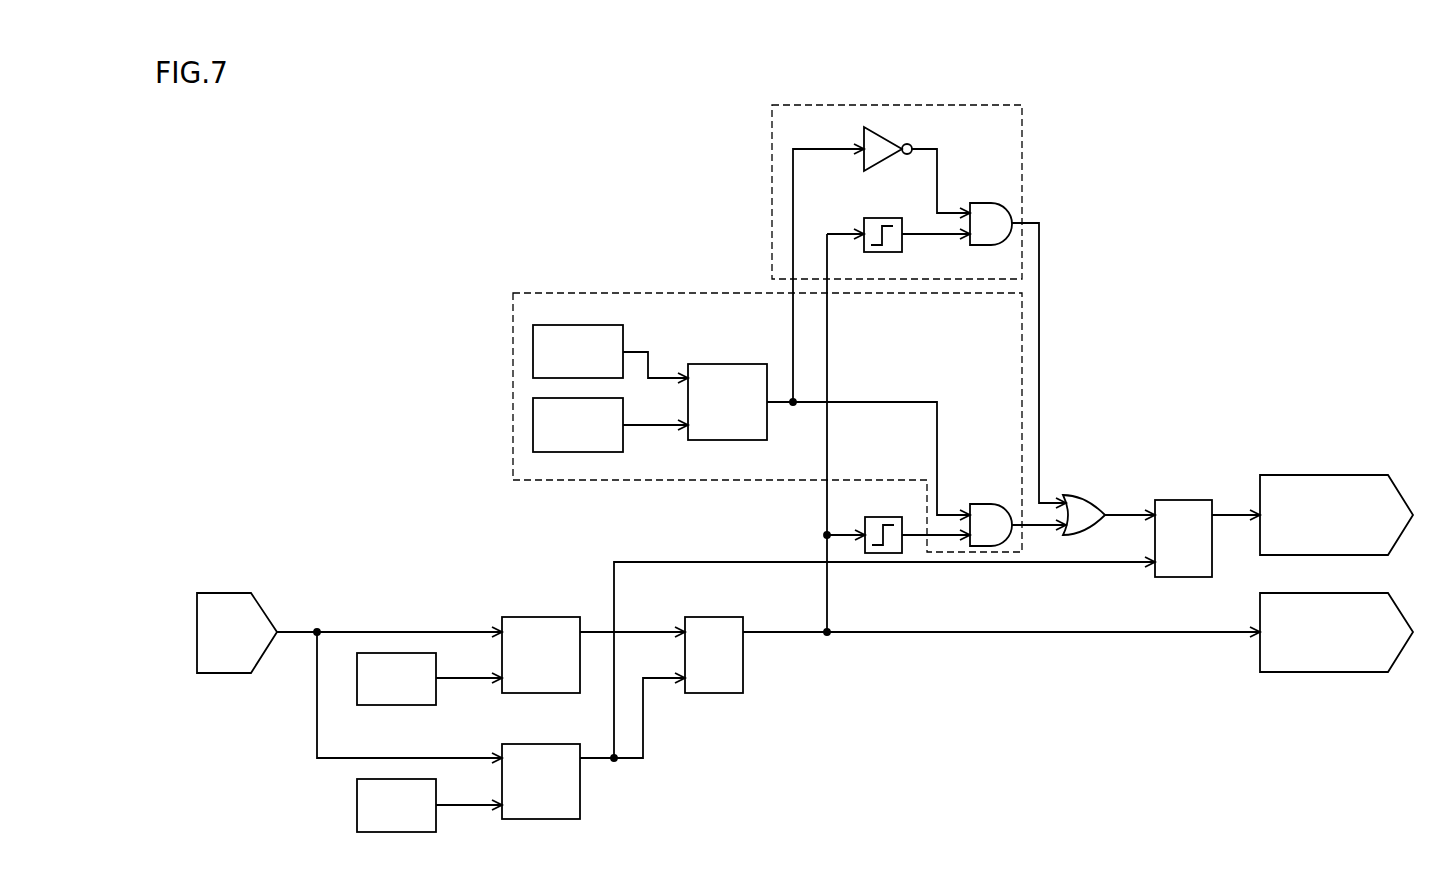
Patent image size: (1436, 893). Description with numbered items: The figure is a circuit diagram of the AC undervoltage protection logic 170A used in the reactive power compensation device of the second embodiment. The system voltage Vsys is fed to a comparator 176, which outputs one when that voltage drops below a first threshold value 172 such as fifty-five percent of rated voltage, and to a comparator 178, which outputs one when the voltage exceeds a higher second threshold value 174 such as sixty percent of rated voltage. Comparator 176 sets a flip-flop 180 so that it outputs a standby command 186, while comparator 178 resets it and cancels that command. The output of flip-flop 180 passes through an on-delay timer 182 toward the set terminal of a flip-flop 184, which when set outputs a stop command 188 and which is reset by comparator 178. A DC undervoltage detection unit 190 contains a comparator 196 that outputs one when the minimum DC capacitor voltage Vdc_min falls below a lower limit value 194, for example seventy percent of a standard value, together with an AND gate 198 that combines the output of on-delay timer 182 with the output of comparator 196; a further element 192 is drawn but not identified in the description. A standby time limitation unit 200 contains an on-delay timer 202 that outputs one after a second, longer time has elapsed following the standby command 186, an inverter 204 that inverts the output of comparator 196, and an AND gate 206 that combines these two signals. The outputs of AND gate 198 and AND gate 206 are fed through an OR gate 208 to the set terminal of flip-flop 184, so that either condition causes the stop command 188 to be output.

The AC undervoltage protection logic 170A is at (428, 154).
The first threshold value 172 is at (395, 705).
The second threshold value 174 is at (395, 832).
The comparator 176 is at (540, 617).
The comparator 178 is at (543, 819).
The flip-flop 180 is at (715, 693).
The on-delay timer 182 is at (885, 553).
The flip-flop 184 is at (1184, 500).
The standby command 186 is at (1340, 593).
The stop command 188 is at (1340, 475).
The DC undervoltage detection unit 190 is at (683, 293).
The minimum DC voltage Vdc_min 192 is at (580, 325).
The lower limit value 194 is at (580, 452).
The comparator 196 is at (727, 364).
The AND gate 198 is at (988, 504).
The standby time limitation unit 200 is at (968, 105).
The on-delay timer 202 is at (885, 253).
The inverter 204 is at (884, 132).
The AND gate 206 is at (980, 202).
The OR gate 208 is at (1083, 495).